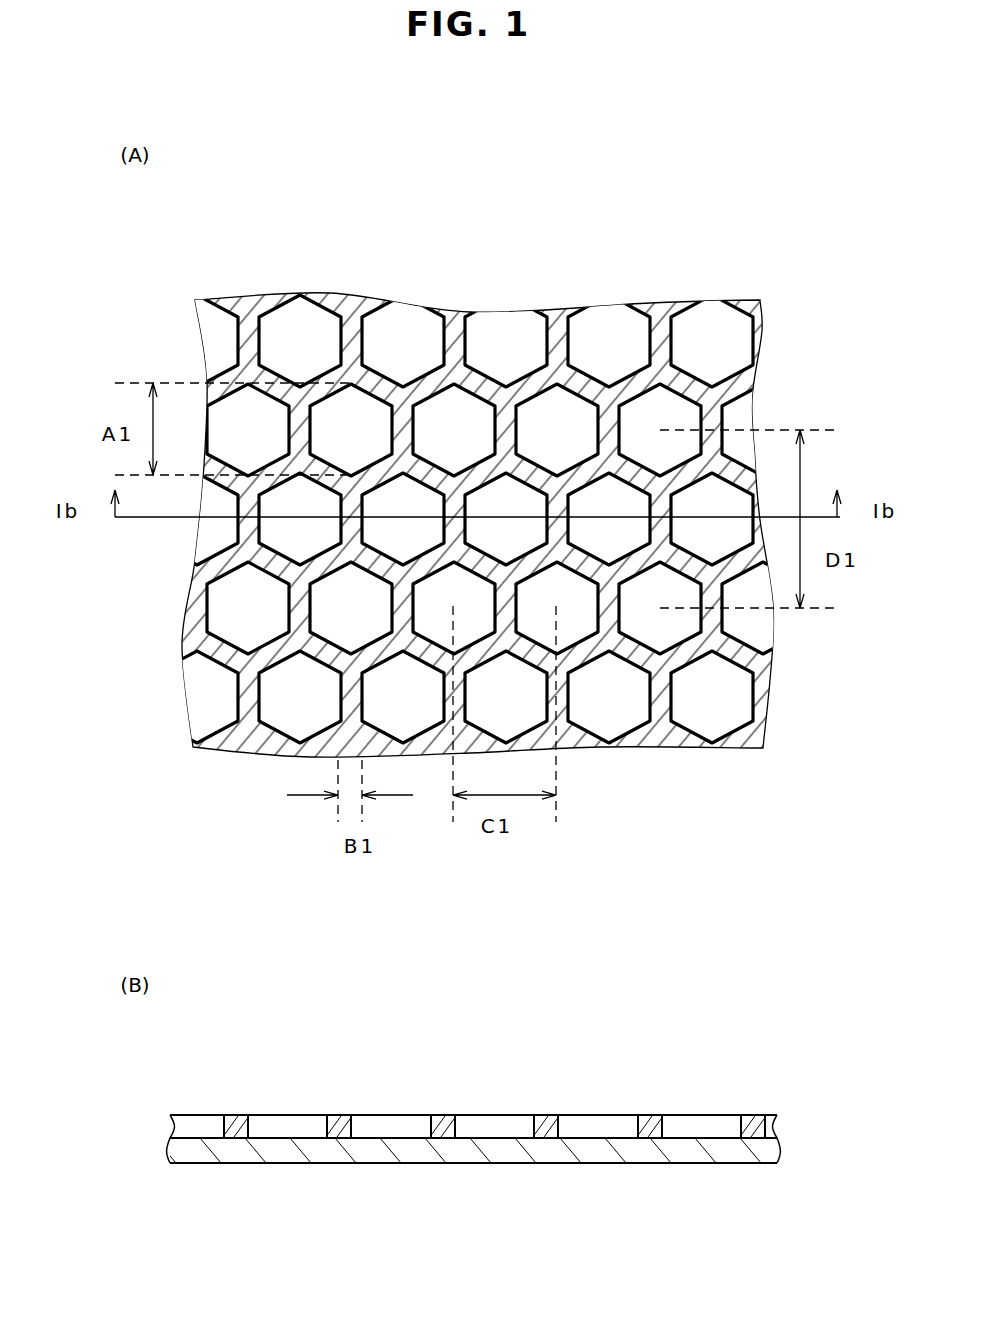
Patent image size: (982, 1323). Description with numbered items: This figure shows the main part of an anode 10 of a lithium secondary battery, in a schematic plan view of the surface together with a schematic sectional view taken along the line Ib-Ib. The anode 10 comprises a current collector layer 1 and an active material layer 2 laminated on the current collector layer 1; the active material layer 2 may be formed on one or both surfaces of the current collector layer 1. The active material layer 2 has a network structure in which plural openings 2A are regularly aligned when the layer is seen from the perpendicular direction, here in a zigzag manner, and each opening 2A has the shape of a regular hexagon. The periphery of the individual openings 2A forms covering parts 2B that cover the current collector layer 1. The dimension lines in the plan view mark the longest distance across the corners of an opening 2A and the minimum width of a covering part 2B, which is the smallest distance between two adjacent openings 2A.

The anode 10 is at (505, 715).
The active material layer 2 is at (506, 660).
The opening 2A is at (358, 435).
The covering part 2B is at (528, 387).
The current collector layer 1 is at (650, 1147).